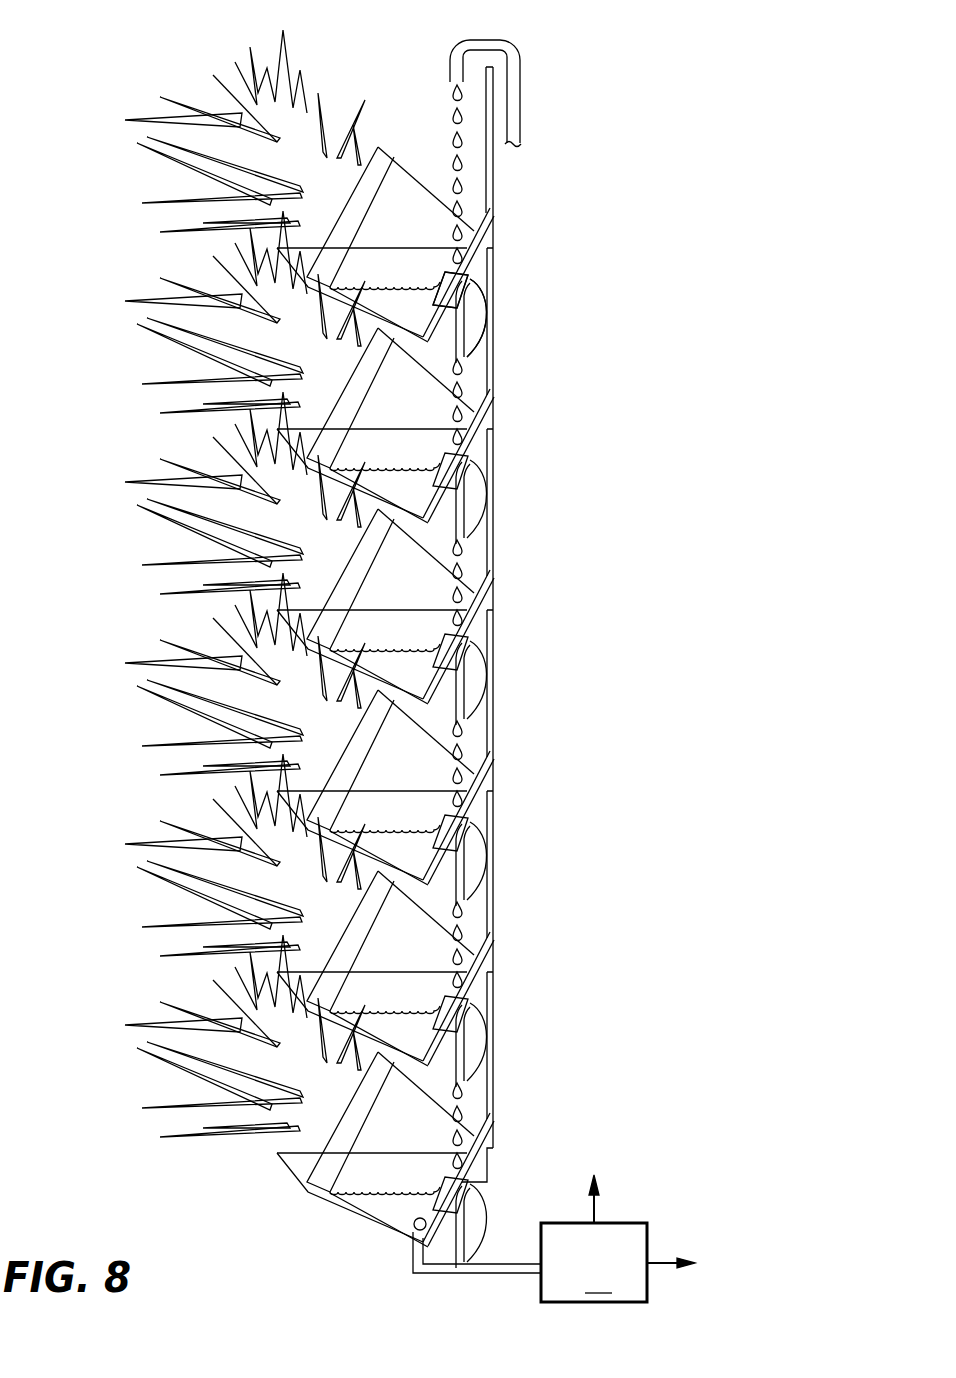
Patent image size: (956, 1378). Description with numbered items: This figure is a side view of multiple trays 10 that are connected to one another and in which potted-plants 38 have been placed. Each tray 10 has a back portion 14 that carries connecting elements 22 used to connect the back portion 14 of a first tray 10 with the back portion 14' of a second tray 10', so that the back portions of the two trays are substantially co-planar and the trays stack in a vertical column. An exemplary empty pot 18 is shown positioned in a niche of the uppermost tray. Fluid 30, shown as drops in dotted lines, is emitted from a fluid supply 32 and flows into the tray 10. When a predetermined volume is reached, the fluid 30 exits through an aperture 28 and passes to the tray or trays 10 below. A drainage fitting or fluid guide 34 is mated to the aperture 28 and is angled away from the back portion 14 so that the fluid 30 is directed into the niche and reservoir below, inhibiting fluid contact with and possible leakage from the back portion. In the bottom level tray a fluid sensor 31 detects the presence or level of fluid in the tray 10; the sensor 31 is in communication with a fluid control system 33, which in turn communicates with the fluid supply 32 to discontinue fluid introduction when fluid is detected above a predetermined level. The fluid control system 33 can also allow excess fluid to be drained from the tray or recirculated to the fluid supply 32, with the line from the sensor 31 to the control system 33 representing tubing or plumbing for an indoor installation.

The tray 10 is at (384, 1160).
The second tray 10' is at (439, 944).
The back portion 14 is at (531, 624).
The back portion of second tray 14' is at (545, 864).
The pot 18 is at (396, 222).
The connecting elements 22 is at (493, 1012).
The aperture 28 is at (445, 289).
The fluid 30 is at (450, 122).
The fluid sensor 31 is at (417, 1227).
The fluid supply 32 is at (525, 83).
The fluid control system 33 is at (654, 1224).
The fluid guide 34 is at (478, 309).
The potted-plants 38 is at (177, 167).